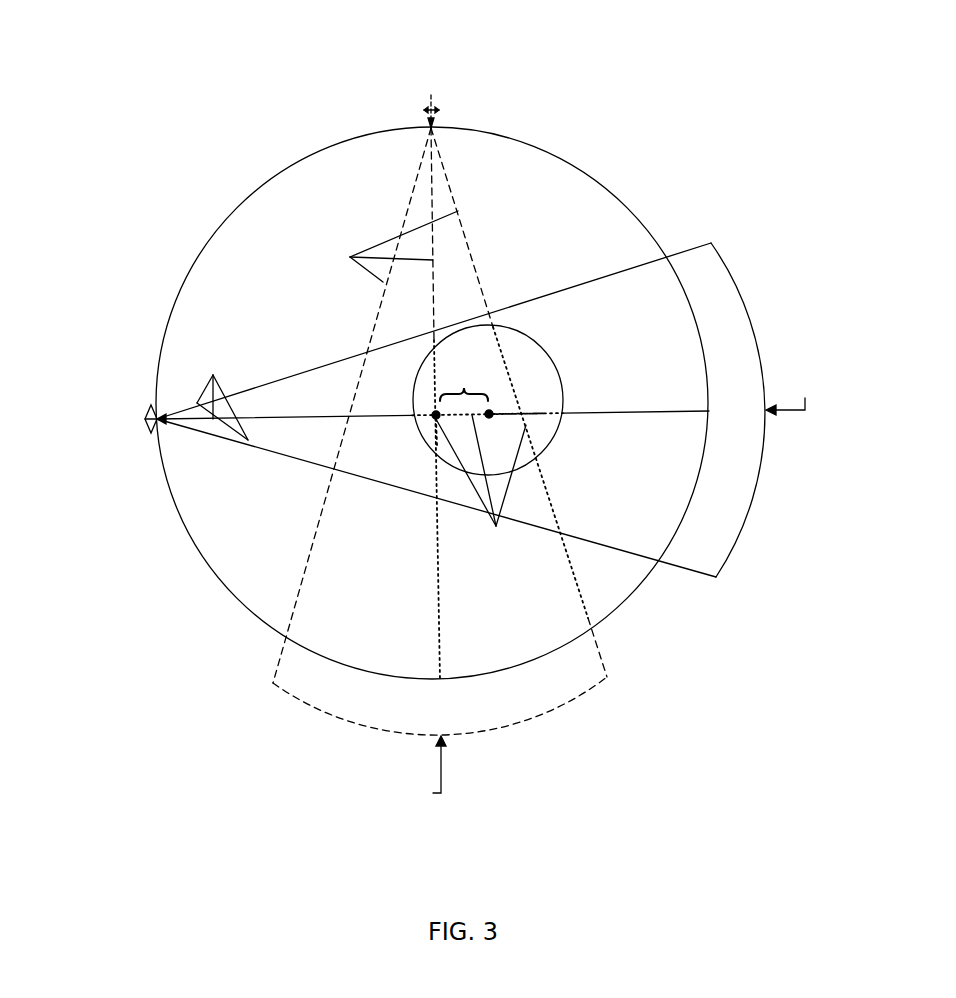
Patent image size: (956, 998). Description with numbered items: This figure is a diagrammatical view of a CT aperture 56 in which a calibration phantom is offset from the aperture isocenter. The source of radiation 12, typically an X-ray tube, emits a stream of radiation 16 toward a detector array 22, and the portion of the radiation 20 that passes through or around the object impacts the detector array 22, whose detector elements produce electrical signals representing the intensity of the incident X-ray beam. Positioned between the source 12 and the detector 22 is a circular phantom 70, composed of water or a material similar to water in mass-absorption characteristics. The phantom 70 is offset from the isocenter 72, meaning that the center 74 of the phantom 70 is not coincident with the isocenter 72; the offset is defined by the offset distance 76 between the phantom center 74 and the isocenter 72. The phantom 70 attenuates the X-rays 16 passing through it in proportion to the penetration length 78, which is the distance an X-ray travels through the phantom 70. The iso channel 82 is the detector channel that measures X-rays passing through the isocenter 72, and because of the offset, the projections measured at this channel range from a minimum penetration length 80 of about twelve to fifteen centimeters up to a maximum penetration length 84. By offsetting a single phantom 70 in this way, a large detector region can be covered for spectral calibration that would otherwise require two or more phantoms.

The source of radiation 12 is at (438, 105).
The stream of radiation 16 is at (327, 325).
The portion of the radiation 20 is at (633, 412).
The detector array 22 is at (757, 497).
The aperture 56 is at (160, 186).
The circular phantom 70 is at (556, 343).
The isocenter 72 is at (434, 411).
The center of the phantom 74 is at (492, 414).
The offset distance 76 is at (464, 388).
The penetration length 78 is at (481, 486).
The minimum penetration length 80 is at (435, 435).
The iso channel 82 is at (605, 592).
The maximum penetration length 84 is at (543, 414).